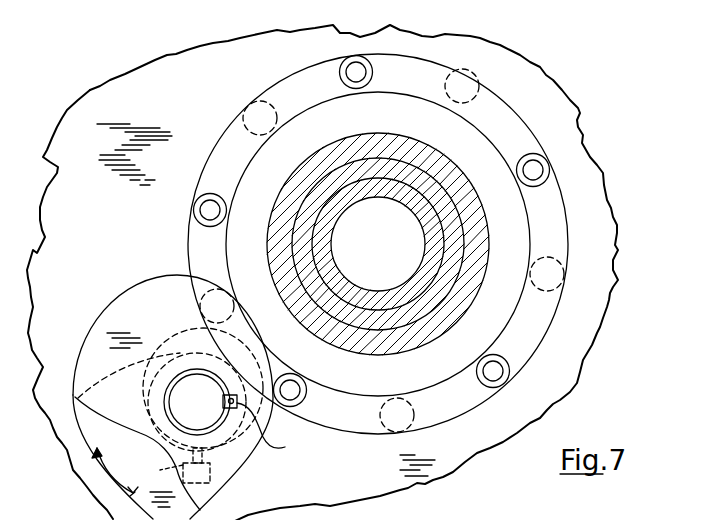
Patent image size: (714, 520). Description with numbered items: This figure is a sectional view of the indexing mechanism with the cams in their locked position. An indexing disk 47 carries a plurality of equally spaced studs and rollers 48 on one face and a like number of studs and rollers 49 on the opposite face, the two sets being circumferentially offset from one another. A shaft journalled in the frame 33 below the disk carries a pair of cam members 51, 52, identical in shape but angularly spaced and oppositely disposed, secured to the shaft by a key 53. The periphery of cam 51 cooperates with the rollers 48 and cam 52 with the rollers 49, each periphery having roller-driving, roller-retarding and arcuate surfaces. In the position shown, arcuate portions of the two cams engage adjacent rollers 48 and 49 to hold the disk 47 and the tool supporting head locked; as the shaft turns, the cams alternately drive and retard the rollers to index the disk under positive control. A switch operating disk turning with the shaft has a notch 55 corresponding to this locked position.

The frame 33 is at (600, 300).
The indexing disk 47 is at (528, 345).
The studs and rollers 48 is at (342, 63).
The studs and rollers 49 is at (248, 110).
The cam member 51 is at (128, 310).
The cam member 52 is at (200, 500).
The key 53 is at (268, 446).
The notch 55 is at (183, 468).